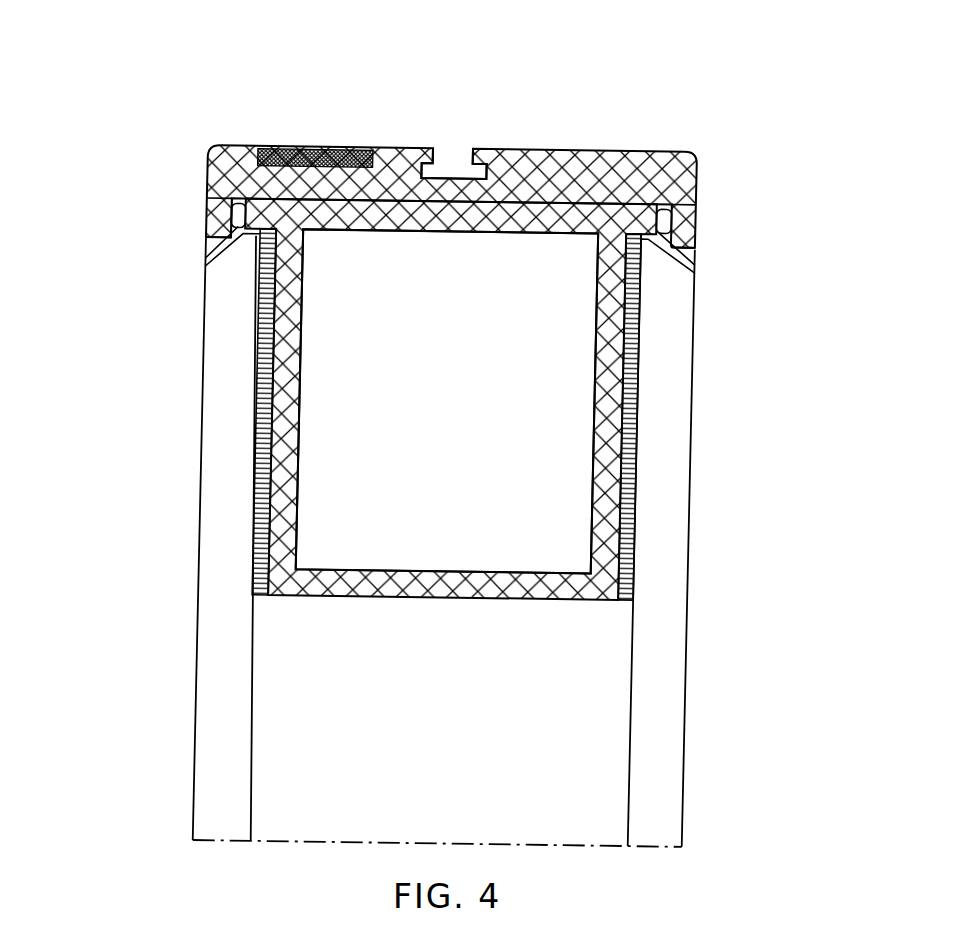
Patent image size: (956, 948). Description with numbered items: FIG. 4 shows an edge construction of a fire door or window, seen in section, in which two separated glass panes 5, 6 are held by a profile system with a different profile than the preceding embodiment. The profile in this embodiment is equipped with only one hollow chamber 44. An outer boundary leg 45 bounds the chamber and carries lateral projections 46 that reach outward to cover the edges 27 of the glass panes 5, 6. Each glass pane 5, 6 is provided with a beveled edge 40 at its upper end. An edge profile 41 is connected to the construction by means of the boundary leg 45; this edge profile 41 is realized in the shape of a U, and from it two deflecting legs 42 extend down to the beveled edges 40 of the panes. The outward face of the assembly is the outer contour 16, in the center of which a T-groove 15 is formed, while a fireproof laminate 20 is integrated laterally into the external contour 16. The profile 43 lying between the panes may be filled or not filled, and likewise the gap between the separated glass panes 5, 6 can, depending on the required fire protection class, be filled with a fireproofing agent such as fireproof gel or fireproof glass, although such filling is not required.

The glass pane 5 is at (222, 630).
The glass pane 6 is at (663, 697).
The T-groove 15 is at (455, 168).
The outer contour 16 is at (620, 150).
The fireproof laminate 20 is at (307, 148).
The edge of glass pane 27 is at (240, 232).
The beveled edge 40 is at (208, 232).
The edge profile 41 is at (541, 118).
The deflecting leg 42 is at (237, 212).
The profile 43 is at (638, 400).
The hollow chamber 44 is at (447, 401).
The outer boundary leg 45 is at (650, 152).
The lateral projection 46 is at (213, 205).